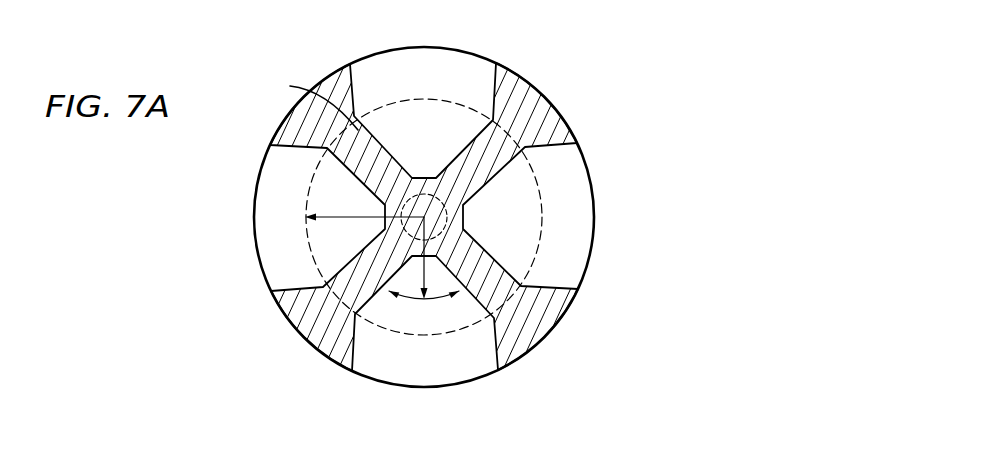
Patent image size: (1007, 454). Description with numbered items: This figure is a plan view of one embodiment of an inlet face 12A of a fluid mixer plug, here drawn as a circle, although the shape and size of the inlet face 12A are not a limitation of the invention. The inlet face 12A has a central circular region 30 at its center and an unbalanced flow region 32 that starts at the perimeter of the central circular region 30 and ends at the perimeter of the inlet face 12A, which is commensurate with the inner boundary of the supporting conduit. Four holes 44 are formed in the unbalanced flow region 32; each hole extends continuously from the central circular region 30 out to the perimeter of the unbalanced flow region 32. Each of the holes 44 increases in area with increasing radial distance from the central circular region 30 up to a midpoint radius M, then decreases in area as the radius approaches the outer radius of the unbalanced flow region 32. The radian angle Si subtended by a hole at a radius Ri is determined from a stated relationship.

The inlet face 12A is at (622, 68).
The unbalanced flow region 32 is at (578, 237).
The holes 44 is at (490, 118).
The central circular region 30 is at (313, 102).
The midpoint radius M is at (342, 214).
The radius Ri is at (440, 298).
The radian angle Si is at (408, 298).